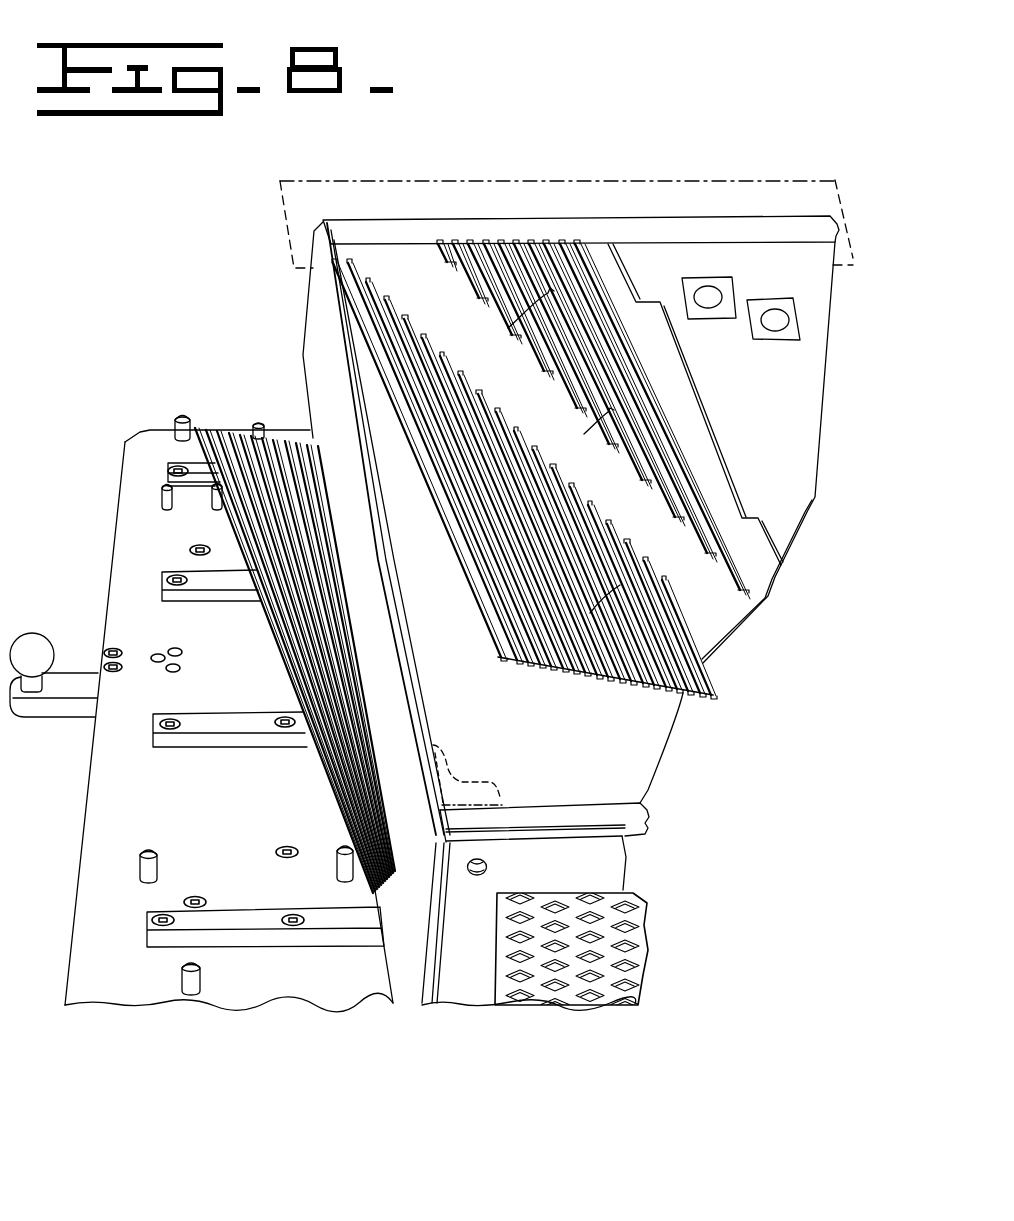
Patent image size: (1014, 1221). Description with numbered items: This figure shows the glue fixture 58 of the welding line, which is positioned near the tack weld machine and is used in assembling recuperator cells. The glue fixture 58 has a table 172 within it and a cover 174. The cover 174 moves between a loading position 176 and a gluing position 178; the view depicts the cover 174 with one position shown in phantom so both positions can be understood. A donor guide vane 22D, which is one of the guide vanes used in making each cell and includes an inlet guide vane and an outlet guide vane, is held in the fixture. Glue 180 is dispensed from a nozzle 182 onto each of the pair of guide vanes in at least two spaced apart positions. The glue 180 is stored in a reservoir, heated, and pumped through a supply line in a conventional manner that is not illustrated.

The glue fixture 58 is at (186, 373).
The donor guide vane 22D is at (498, 240).
The table 172 is at (620, 733).
The cover 174 is at (790, 403).
The loading position 176 is at (749, 167).
The gluing position 178 is at (650, 840).
The glue 180 is at (508, 328).
The nozzle 182 is at (780, 308).